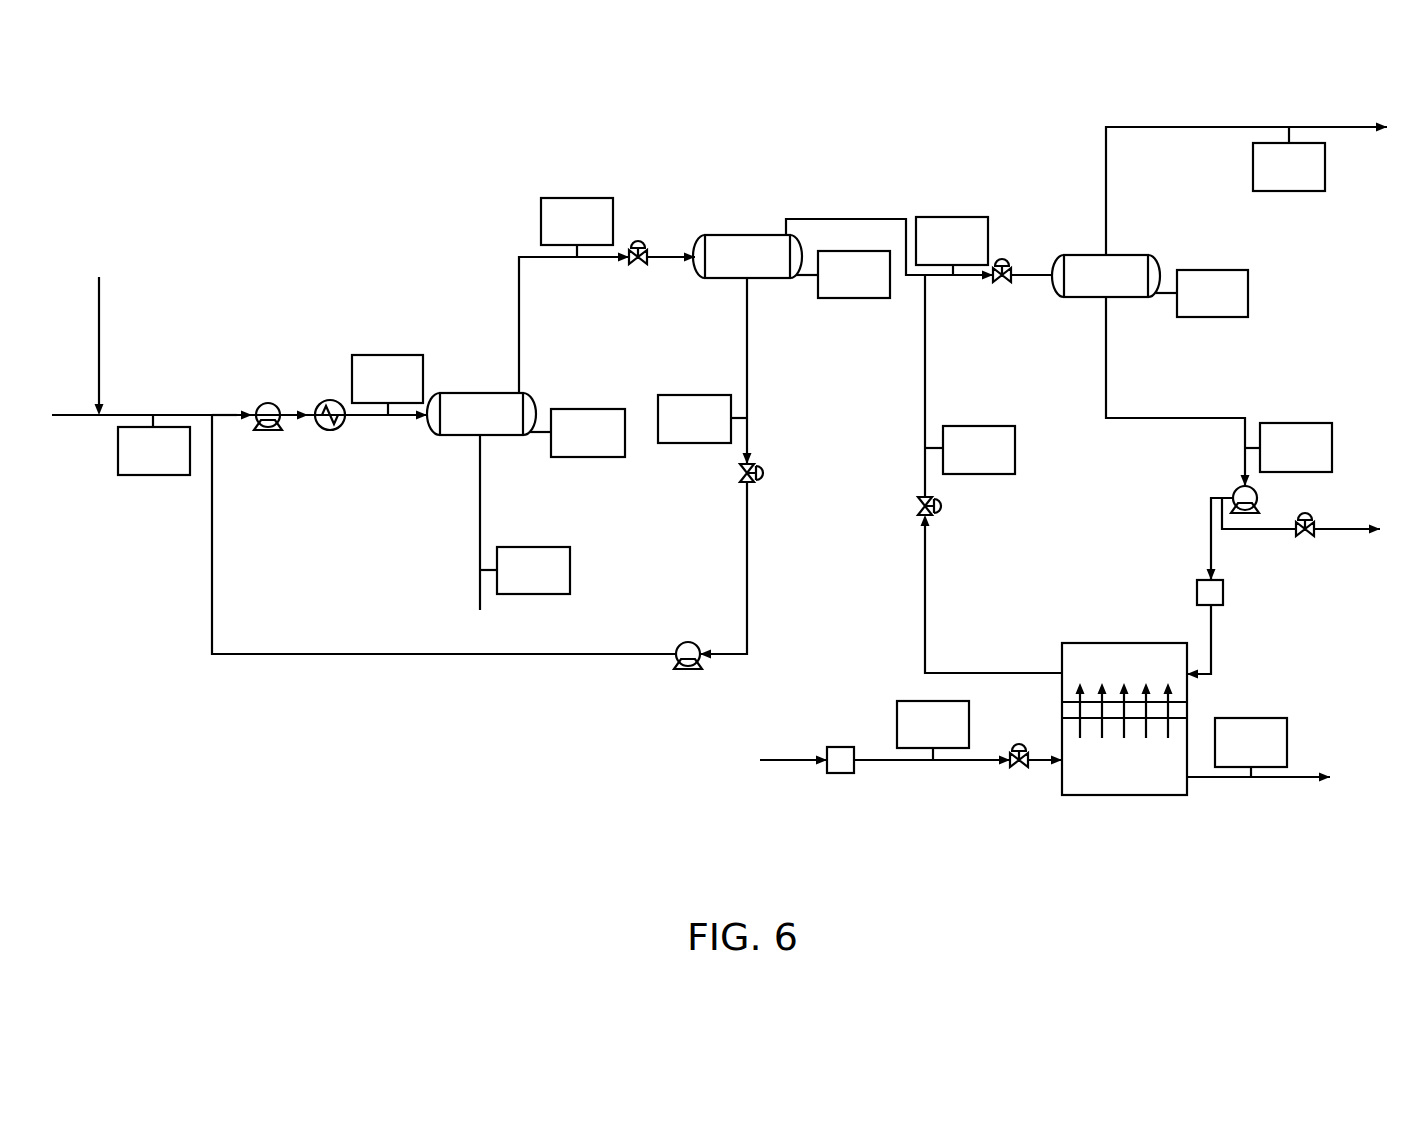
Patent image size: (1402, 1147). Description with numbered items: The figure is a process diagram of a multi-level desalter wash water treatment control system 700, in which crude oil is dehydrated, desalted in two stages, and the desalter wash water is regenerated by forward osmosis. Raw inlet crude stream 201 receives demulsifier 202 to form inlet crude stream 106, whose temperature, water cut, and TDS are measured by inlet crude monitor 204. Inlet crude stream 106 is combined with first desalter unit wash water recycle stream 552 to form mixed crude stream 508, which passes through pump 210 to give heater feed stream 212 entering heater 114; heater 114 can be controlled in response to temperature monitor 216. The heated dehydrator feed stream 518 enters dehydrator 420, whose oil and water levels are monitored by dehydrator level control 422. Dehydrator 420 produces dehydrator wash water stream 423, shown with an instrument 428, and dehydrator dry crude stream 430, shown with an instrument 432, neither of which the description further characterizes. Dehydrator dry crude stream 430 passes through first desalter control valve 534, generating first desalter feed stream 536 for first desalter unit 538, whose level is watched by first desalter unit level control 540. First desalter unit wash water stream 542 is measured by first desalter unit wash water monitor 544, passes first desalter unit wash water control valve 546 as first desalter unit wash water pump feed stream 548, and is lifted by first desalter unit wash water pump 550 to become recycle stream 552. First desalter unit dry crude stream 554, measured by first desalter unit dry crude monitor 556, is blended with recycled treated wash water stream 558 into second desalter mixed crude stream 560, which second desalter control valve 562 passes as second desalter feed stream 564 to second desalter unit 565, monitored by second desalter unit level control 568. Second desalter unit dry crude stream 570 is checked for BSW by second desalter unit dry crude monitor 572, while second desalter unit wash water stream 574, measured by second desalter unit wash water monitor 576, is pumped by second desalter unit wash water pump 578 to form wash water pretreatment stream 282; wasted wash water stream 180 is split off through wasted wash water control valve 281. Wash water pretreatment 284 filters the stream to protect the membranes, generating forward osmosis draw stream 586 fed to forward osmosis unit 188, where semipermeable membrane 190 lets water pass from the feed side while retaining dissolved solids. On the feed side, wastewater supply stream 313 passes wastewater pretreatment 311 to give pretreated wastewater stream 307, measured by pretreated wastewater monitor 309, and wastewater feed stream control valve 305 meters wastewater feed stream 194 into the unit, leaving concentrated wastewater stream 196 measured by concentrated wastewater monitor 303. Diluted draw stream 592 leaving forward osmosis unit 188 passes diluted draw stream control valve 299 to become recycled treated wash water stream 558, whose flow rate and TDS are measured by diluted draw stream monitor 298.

The multi-level desalter wash water treatment control system 700 is at (181, 143).
The raw inlet crude stream 201 is at (82, 413).
The inlet crude stream 106 is at (107, 418).
The demulsifier 202 is at (97, 313).
The inlet crude monitor 204 is at (130, 461).
The mixed crude stream 508 is at (237, 412).
The pump 210 is at (268, 402).
The heater feed stream 212 is at (293, 418).
The heater 114 is at (330, 431).
The temperature monitor 216 is at (364, 389).
The dehydrator feed stream 518 is at (400, 418).
The dehydrator 420 is at (459, 393).
The dehydrator level control 422 is at (564, 443).
The dehydrator wash water stream 423 is at (479, 519).
The sensor 428 is at (510, 581).
The dehydrator dry crude stream 430 is at (519, 300).
The sensor 432 is at (553, 232).
The first desalter control valve 534 is at (638, 266).
The first desalter feed stream 536 is at (668, 262).
The first desalter unit 538 is at (747, 235).
The first desalter unit level control 540 is at (830, 285).
The first desalter unit wash water stream 542 is at (747, 338).
The first desalter unit wash water monitor 544 is at (670, 429).
The first desalter unit wash water control valve 546 is at (740, 473).
The first desalter unit wash water pump feed stream 548 is at (747, 560).
The first desalter unit wash water pump 550 is at (688, 642).
The first desalter unit wash water recycle stream 552 is at (363, 654).
The first desalter unit dry crude stream 554 is at (840, 219).
The first desalter unit dry crude monitor 556 is at (928, 251).
The recycled treated wash water stream 558 is at (925, 358).
The second desalter mixed crude stream 560 is at (962, 280).
The second desalter control valve 562 is at (1003, 285).
The second desalter feed stream 564 is at (1034, 275).
The second desalter unit 565 is at (1125, 255).
The second desalter unit level control 568 is at (1188, 304).
The second desalter unit dry crude stream 570 is at (1107, 166).
The second desalter unit dry crude monitor 572 is at (1265, 177).
The second desalter unit wash water stream 574 is at (1107, 362).
The second desalter unit wash water monitor 576 is at (1272, 458).
The second desalter unit wash water pump 578 is at (1235, 490).
The wash water pretreatment stream 282 is at (1211, 540).
The wasted wash water stream 180 is at (1282, 530).
The wasted wash water control valve 281 is at (1305, 540).
The wash water pretreatment 284 is at (1223, 593).
The forward osmosis draw stream 586 is at (1211, 650).
The forward osmosis unit 188 is at (1122, 643).
The semipermeable membrane 190 is at (1062, 710).
The diluted draw stream monitor 298 is at (955, 460).
The diluted draw stream control valve 299 is at (918, 506).
The diluted draw stream 592 is at (925, 598).
The wastewater supply stream 313 is at (790, 760).
The wastewater pretreatment 311 is at (840, 747).
The pretreated wastewater monitor 309 is at (909, 735).
The pretreated wastewater stream 307 is at (965, 762).
The wastewater feed stream control valve 305 is at (1019, 770).
The wastewater feed stream 194 is at (1040, 762).
The concentrated wastewater monitor 303 is at (1227, 752).
The concentrated wastewater stream 196 is at (1305, 777).